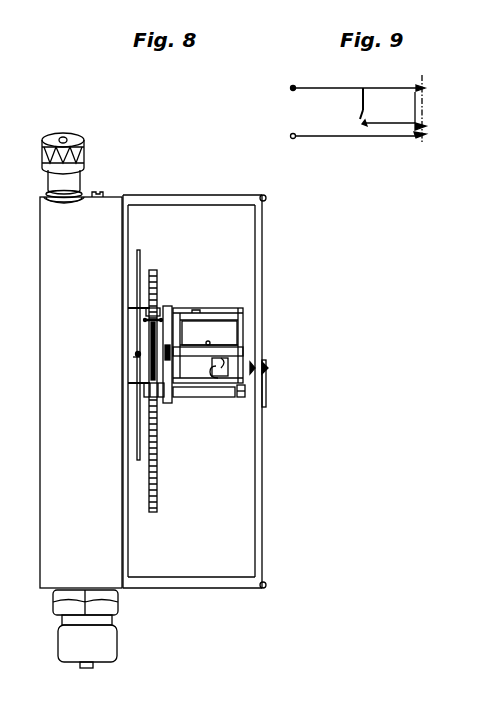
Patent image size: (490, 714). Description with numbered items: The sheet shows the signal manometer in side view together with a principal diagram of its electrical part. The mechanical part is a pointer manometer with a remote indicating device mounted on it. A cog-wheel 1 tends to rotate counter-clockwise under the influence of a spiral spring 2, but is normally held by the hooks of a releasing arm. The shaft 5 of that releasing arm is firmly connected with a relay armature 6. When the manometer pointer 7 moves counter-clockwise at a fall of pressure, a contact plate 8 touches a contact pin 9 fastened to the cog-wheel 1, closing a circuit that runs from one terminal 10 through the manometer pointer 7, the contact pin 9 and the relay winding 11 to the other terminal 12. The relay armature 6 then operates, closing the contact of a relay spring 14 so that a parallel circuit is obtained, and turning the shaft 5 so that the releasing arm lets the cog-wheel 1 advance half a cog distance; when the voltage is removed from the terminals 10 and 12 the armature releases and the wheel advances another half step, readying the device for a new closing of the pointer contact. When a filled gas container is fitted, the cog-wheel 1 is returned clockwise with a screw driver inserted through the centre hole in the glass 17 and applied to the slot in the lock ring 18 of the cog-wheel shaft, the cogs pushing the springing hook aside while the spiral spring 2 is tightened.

In FIG. 8, the cog-wheel 1 is at (150, 492).
In FIG. 8, the spiral spring 2 is at (150, 416).
In FIG. 8, the shaft 5 is at (222, 312).
In FIG. 8, the relay armature 6 is at (225, 333).
In FIG. 8, the manometer pointer 7 is at (137, 272).
In FIG. 9, the manometer pointer 7 is at (360, 118).
In FIG. 8, the contact plate 8 is at (136, 354).
In FIG. 8, the contact pin 9 is at (133, 358).
In FIG. 9, the contact pin 9 is at (366, 126).
In FIG. 9, the terminal 10 is at (290, 88).
In FIG. 9, the relay winding 11 is at (427, 131).
In FIG. 9, the terminal 12 is at (290, 136).
In FIG. 9, the relay spring 14 is at (425, 86).
In FIG. 8, the glass 17 is at (264, 421).
In FIG. 8, the lock ring 18 is at (245, 388).